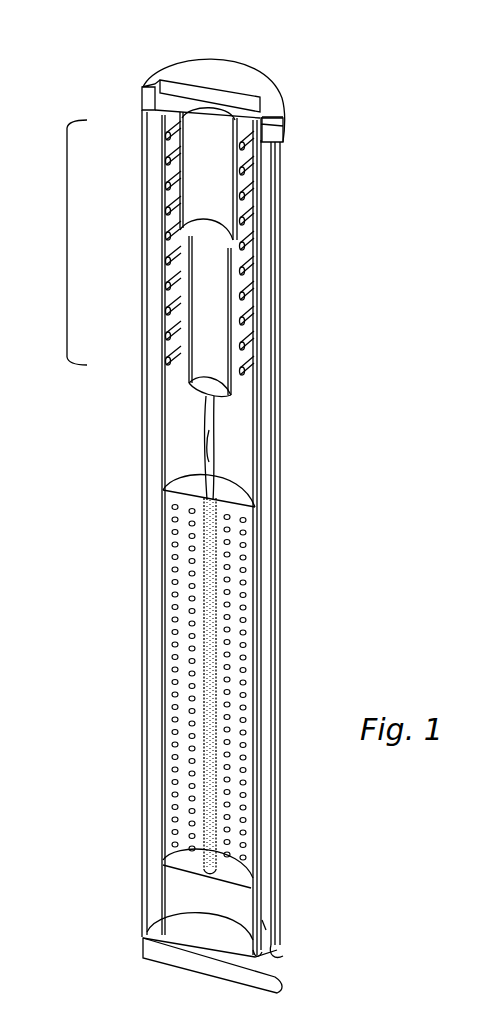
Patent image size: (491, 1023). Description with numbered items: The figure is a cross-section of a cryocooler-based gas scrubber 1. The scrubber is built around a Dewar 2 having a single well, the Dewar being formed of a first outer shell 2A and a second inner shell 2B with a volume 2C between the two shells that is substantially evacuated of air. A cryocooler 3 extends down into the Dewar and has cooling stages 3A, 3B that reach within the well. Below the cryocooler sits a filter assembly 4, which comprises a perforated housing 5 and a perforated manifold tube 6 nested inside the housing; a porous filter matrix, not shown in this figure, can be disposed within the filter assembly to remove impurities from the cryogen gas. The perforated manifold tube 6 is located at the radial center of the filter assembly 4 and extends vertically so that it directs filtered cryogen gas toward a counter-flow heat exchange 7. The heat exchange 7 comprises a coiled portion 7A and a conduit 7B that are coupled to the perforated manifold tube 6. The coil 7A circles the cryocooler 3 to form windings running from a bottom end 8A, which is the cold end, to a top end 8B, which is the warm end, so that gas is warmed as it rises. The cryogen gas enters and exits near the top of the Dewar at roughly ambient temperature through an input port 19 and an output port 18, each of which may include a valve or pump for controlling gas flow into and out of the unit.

The cryocooler-based gas scrubber 1 is at (98, 76).
The Dewar 2 is at (142, 431).
The first outer shell 2A is at (278, 951).
The second inner shell 2B is at (258, 903).
The volume 2C is at (264, 926).
The cryocooler 3 is at (230, 76).
The cooling stage 3A is at (234, 206).
The cooling stage 3B is at (231, 323).
The filter assembly 4 is at (252, 506).
The perforated housing 5 is at (170, 574).
The perforated manifold tube 6 is at (210, 649).
The counter-flow heat exchange 7 is at (65, 242).
The coiled portion 7A is at (166, 273).
The conduit 7B is at (212, 470).
The bottom end 8A is at (235, 535).
The top end 8B is at (285, 141).
The output port 18 is at (266, 118).
The input port 19 is at (152, 95).